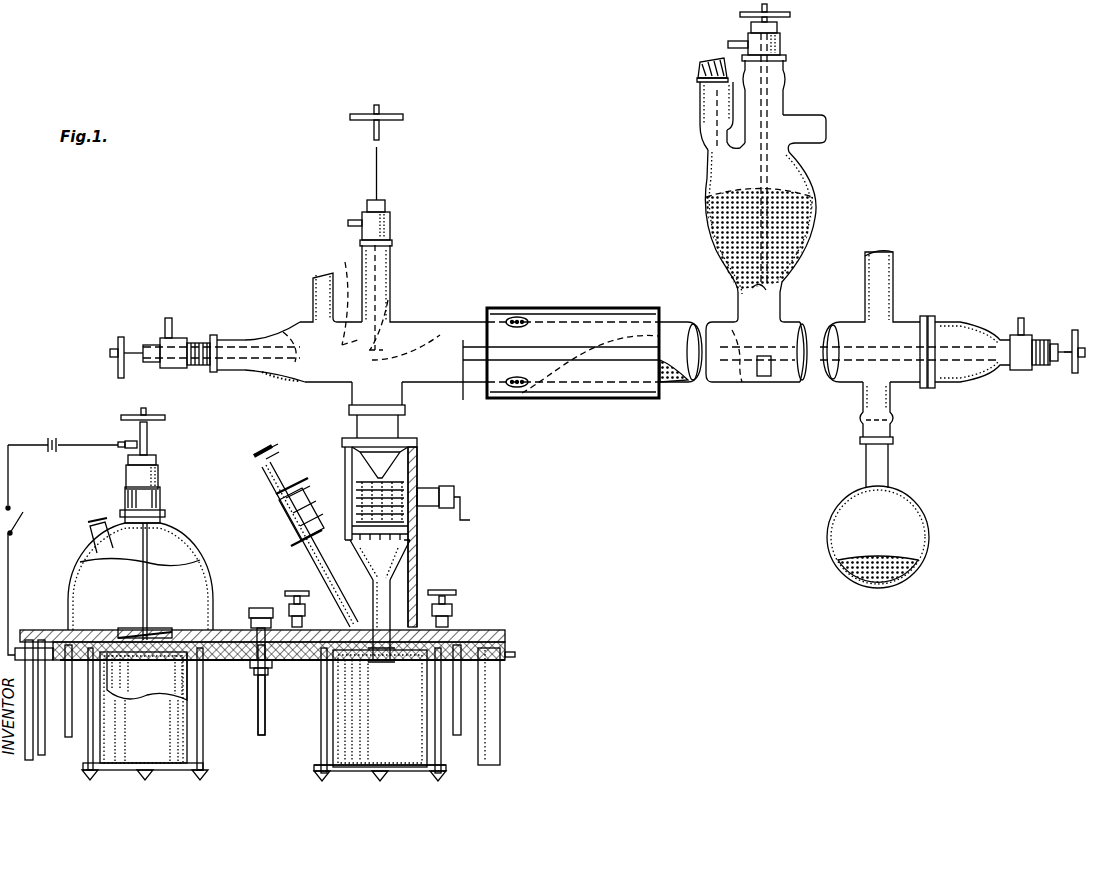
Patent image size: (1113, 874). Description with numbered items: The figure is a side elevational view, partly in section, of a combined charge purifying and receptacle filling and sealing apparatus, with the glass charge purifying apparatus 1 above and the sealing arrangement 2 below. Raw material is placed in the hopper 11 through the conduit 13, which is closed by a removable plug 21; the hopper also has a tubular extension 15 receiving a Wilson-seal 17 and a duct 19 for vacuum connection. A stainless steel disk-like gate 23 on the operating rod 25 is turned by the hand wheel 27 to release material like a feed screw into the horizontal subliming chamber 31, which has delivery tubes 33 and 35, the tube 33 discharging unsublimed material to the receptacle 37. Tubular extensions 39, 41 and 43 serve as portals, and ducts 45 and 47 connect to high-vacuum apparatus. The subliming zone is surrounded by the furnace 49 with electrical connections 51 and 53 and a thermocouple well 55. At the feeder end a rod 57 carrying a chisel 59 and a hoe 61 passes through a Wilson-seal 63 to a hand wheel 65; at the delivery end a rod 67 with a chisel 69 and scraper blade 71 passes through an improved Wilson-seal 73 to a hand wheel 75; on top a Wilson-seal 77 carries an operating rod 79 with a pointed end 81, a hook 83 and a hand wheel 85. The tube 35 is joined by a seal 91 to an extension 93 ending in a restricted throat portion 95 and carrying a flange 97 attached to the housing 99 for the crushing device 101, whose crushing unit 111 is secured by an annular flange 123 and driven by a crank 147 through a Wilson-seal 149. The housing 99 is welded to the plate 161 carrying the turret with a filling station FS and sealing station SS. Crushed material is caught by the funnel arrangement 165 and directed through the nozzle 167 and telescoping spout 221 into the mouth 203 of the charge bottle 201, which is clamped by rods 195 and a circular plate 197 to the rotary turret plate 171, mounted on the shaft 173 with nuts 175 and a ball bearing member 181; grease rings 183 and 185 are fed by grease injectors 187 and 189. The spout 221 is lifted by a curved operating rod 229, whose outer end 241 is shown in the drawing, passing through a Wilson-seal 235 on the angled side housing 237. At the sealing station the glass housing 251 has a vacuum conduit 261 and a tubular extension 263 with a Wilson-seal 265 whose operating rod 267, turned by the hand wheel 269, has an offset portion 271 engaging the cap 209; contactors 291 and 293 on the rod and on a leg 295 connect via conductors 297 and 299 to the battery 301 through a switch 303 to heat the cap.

The charge purifying apparatus 1 is at (462, 266).
The sealing arrangement 2 is at (508, 567).
The receptacle filling station FS is at (420, 567).
The receptacle sealing station SS is at (206, 556).
The hopper 11 is at (815, 208).
The conduit 13 is at (700, 135).
The tubular extension 15 is at (783, 100).
The Wilson-seal 17 is at (786, 52).
The duct 19 is at (826, 128).
The removable plug 21 is at (700, 68).
The disk-like gate 23 is at (730, 256).
The operating rod 25 is at (706, 197).
The hand wheel 27 is at (740, 15).
The subliming chamber 31 is at (675, 383).
The delivery tube 33 is at (890, 400).
The delivery tube 35 is at (402, 400).
The receptacle 37 is at (930, 540).
The tubular extension 39 is at (960, 322).
The tubular extension 41 is at (262, 372).
The tubular extension 43 is at (390, 288).
The duct 45 is at (865, 275).
The duct 47 is at (313, 297).
The furnace 49 is at (583, 314).
The electrical connection 51 is at (517, 317).
The electrical connection 53 is at (517, 387).
The thermocouple well 55 is at (560, 395).
The rod 57 is at (880, 350).
The chisel 59 is at (732, 330).
The hoe 61 is at (764, 377).
The Wilson-seal 63 is at (1027, 370).
The hand wheel 65 is at (1074, 330).
The rod 67 is at (283, 332).
The chisel 69 is at (345, 262).
The scraper blade 71 is at (300, 390).
The improved Wilson-seal 73 is at (174, 338).
The hand wheel 75 is at (121, 337).
The Wilson-seal 77 is at (390, 232).
The operating rod 79 is at (388, 265).
The pointed end 81 is at (430, 330).
The hook 83 is at (388, 318).
The hand wheel 85 is at (403, 114).
The seal 91 is at (349, 410).
The extension 93 is at (398, 426).
The restricted throat portion 95 is at (405, 462).
The flange 97 is at (342, 442).
The housing 99 is at (345, 466).
The crushing device 101 is at (348, 482).
The crushing unit 111 is at (420, 526).
The annular flange 123 is at (430, 488).
The crank 147 is at (470, 518).
The Wilson-seal 149 is at (455, 493).
The plate 161 is at (505, 645).
The funnel arrangement 165 is at (405, 565).
The nozzle 167 is at (392, 600).
The rotary turret plate 171 is at (222, 660).
The shaft 173 is at (265, 608).
The nuts 175 is at (257, 630).
The ball bearing member 181 is at (280, 662).
The grease ring 183 is at (306, 676).
The grease ring 185 is at (505, 630).
The grease injector 187 is at (312, 600).
The grease injector 189 is at (452, 614).
The rods 195 is at (203, 704).
The circular plate 197 is at (314, 766).
The charge bottle 201 is at (187, 745).
The mouth 203 is at (143, 660).
The cap 209 is at (150, 632).
The telescoping spout 221 is at (383, 660).
The operating rod 229 is at (268, 470).
The Wilson-seal 235 is at (294, 524).
The side housing 237 is at (298, 556).
The cap 241 is at (254, 456).
The housing 251 is at (185, 555).
The conduit 261 is at (97, 548).
The tubular extension 263 is at (160, 512).
The Wilson-seal 265 is at (126, 478).
The operating rod 267 is at (156, 460).
The hand wheel 269 is at (165, 418).
The offset portion 271 is at (148, 595).
The contactor 291 is at (125, 447).
The contactor 293 is at (30, 640).
The legs 295 is at (500, 745).
The conductor 297 is at (20, 536).
The conductor 299 is at (82, 445).
The battery 301 is at (52, 438).
The switch 303 is at (24, 514).